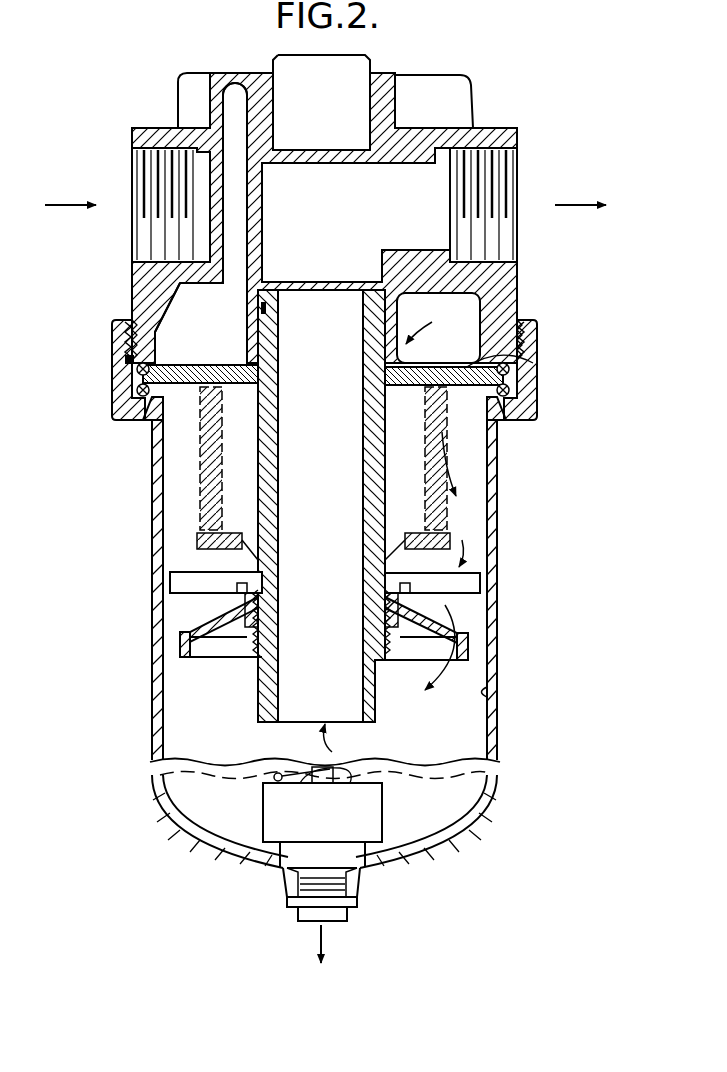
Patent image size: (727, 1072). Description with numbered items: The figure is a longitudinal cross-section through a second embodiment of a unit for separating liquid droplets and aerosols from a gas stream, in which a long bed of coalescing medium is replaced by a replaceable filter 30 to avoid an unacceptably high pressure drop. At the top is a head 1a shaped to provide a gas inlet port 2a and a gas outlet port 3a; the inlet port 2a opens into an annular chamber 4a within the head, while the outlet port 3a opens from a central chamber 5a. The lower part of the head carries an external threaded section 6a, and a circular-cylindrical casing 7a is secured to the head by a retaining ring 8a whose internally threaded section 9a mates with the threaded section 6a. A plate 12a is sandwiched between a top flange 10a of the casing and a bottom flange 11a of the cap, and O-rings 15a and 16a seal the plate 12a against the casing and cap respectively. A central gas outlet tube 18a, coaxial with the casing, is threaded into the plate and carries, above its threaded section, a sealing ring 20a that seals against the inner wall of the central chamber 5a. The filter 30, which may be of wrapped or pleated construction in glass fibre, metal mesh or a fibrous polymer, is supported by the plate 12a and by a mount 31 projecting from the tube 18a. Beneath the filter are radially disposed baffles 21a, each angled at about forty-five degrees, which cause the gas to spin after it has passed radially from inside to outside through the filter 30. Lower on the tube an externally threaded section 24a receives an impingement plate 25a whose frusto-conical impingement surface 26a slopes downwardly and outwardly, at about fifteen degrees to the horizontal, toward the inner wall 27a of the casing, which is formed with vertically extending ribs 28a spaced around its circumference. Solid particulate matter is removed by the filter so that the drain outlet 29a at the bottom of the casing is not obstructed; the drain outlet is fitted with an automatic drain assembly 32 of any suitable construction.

The head 1a is at (386, 66).
The gas inlet port 2a is at (150, 230).
The gas outlet port 3a is at (500, 232).
The annular chamber 4a is at (170, 313).
The central chamber 5a is at (263, 228).
The external threaded section 6a is at (116, 330).
The casing 7a is at (498, 488).
The retaining ring 8a is at (118, 421).
The internally threaded section 9a is at (537, 332).
The top flange 10a is at (138, 396).
The bottom flange 11a is at (140, 366).
The plate 12a is at (520, 362).
The O-ring 15a is at (530, 412).
The O-ring 16a is at (520, 390).
The central gas outlet tube 18a is at (274, 490).
The sealing ring 20a is at (376, 309).
The baffles 21a is at (182, 581).
The externally threaded section 24a is at (257, 658).
The impingement plate 25a is at (442, 648).
The frusto-conical impingement surface 26a is at (464, 607).
The inner wall of the casing 27a is at (490, 693).
The ribs 28a is at (166, 729).
The drain outlet 29a is at (358, 890).
The replaceable filter 30 is at (434, 506).
The mount 31 is at (195, 552).
The automatic drain assembly 32 is at (368, 812).